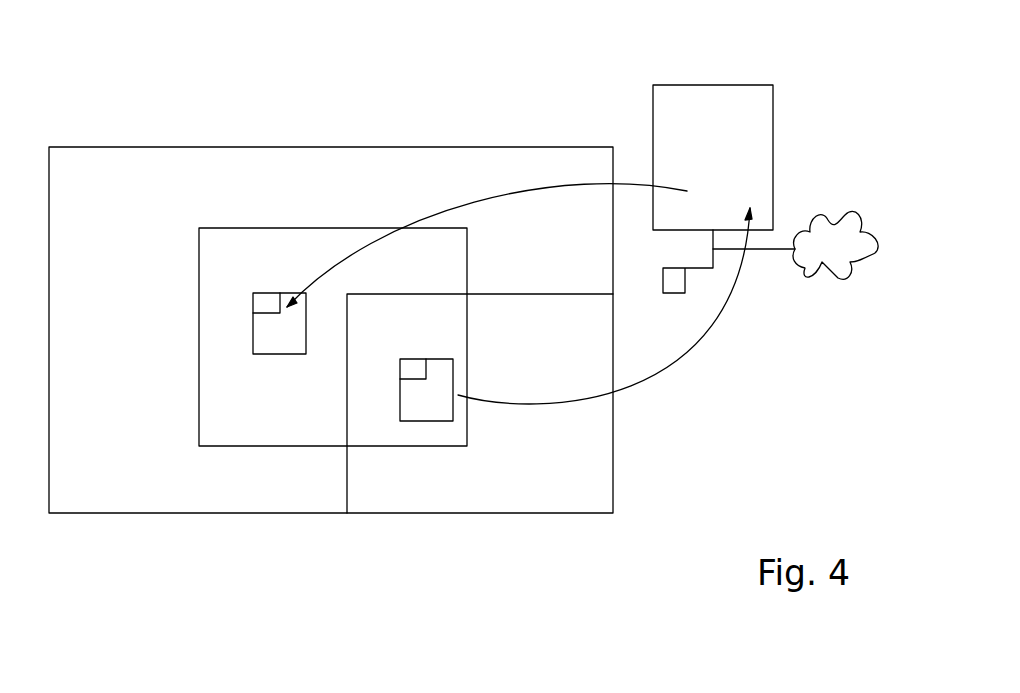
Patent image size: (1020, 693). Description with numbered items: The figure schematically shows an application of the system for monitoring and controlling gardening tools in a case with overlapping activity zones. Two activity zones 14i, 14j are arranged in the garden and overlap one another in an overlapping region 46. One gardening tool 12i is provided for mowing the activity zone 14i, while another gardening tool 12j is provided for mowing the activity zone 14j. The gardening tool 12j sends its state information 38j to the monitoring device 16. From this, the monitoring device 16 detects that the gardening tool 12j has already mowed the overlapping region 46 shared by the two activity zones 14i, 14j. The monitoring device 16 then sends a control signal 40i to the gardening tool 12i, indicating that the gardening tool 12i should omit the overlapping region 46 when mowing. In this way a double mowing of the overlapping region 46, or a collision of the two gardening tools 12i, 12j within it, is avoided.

The activity zone 14i is at (221, 447).
The gardening tool 12i is at (276, 354).
The overlapping region 46 is at (376, 401).
The gardening tool 12j is at (425, 421).
The activity zone 14j is at (532, 513).
The control signal 40i is at (628, 183).
The monitoring device 16 is at (773, 145).
The state information 38j is at (680, 363).